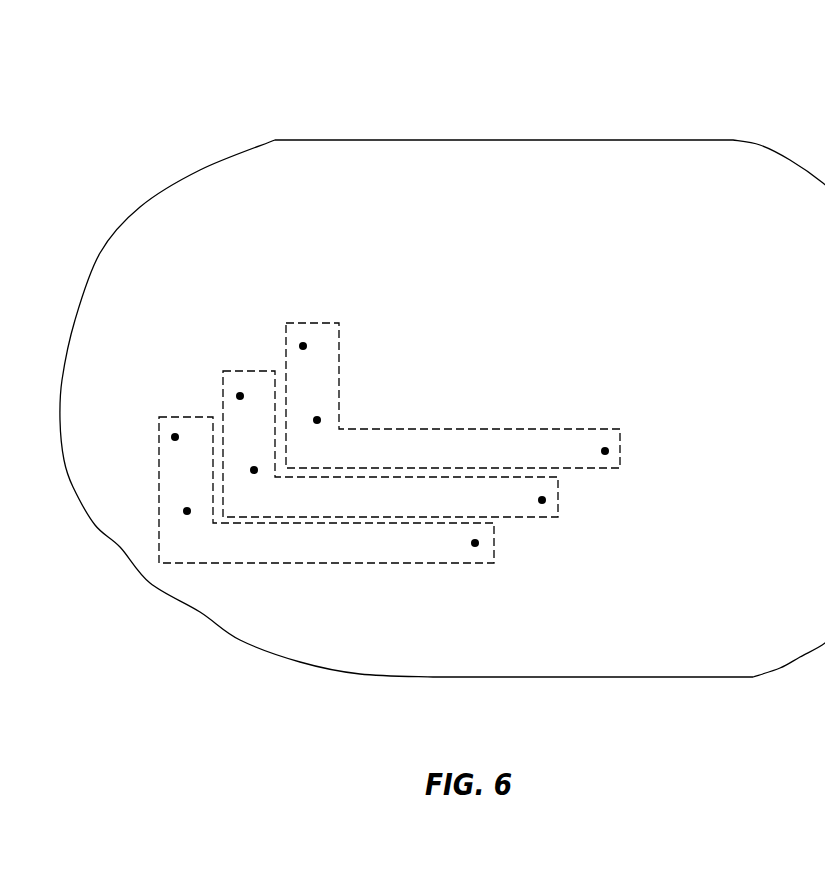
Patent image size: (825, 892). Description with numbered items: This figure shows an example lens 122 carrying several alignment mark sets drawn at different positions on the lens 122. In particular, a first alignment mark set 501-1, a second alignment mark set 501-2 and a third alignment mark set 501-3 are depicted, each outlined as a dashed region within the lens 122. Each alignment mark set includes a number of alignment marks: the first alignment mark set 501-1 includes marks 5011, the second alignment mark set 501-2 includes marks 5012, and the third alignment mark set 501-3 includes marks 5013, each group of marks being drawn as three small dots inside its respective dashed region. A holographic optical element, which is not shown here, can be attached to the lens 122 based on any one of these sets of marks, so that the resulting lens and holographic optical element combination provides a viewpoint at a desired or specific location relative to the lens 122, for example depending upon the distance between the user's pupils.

The lens 122 is at (710, 137).
The first alignment mark set 501-1 is at (492, 563).
The second alignment mark set 501-2 is at (557, 497).
The third alignment mark set 501-3 is at (610, 428).
The marks 5011 is at (475, 543).
The marks 5012 is at (542, 500).
The marks 5013 is at (605, 451).